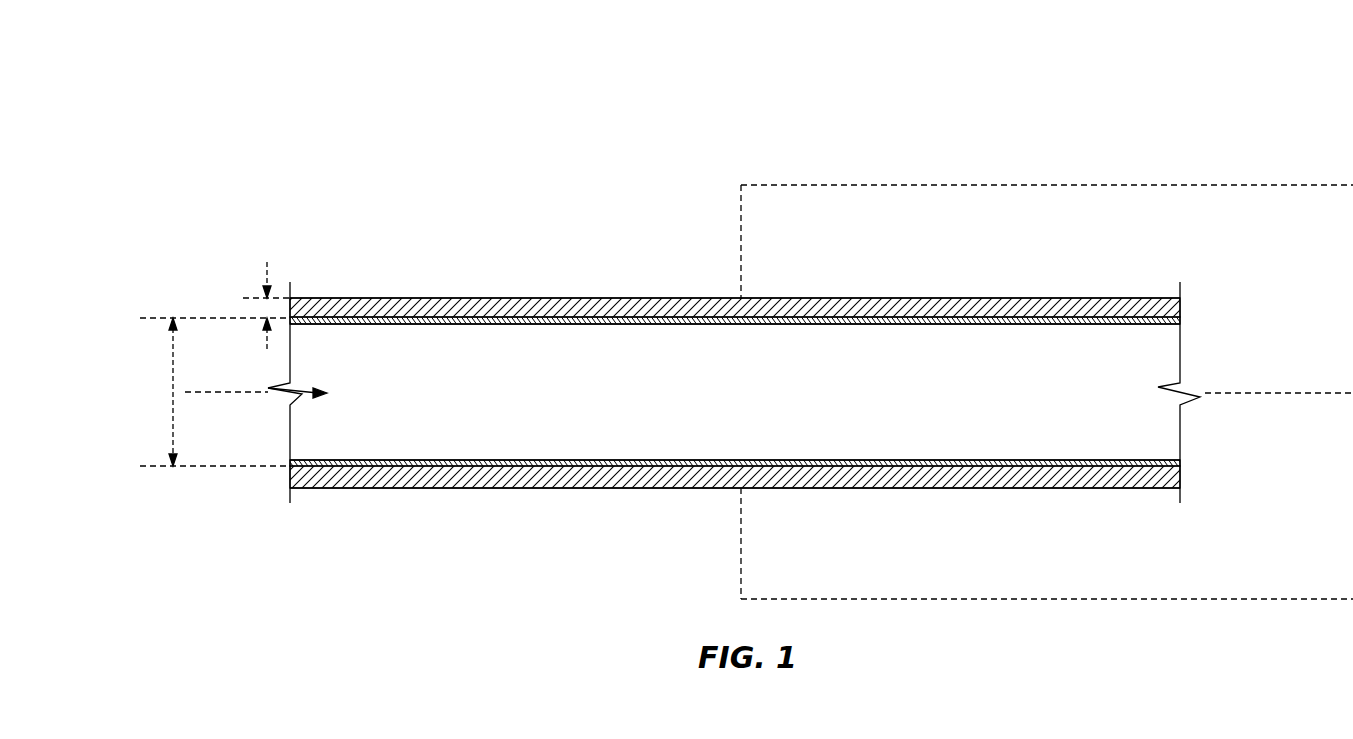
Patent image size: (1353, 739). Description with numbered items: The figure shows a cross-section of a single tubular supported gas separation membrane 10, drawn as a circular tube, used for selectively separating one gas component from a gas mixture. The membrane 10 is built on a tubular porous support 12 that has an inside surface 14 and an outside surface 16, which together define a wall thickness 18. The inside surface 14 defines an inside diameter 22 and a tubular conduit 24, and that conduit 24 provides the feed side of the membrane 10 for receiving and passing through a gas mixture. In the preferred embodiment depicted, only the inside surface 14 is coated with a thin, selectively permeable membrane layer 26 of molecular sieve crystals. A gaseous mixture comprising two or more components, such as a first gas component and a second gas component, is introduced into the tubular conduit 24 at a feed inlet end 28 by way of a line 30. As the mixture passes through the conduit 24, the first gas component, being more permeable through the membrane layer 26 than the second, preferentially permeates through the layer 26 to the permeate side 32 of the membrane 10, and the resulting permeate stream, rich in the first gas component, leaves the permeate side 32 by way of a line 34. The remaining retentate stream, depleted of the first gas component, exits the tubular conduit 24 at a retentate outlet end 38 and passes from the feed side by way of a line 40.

The tubular supported gas separation membrane 10 is at (778, 74).
The tubular porous support 12 is at (432, 307).
The inside surface 14 is at (558, 322).
The outside surface 16 is at (515, 297).
The wall thickness 18 is at (267, 270).
The inside diameter 22 is at (173, 392).
The tubular conduit 24 is at (737, 397).
The membrane layer 26 is at (725, 325).
The feed inlet end 28 is at (262, 492).
The line 30 is at (255, 392).
The permeate side 32 is at (1047, 392).
The line 34 is at (1012, 185).
The retentate outlet end 38 is at (1192, 481).
The line 40 is at (1240, 393).